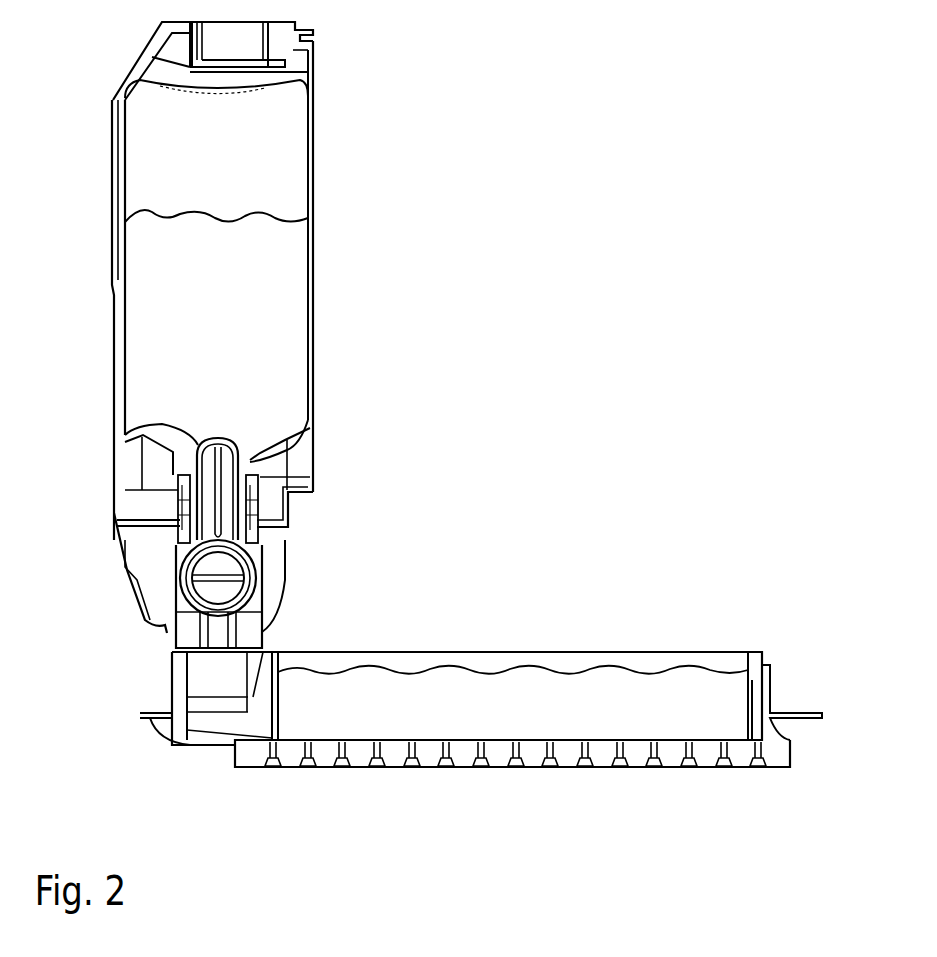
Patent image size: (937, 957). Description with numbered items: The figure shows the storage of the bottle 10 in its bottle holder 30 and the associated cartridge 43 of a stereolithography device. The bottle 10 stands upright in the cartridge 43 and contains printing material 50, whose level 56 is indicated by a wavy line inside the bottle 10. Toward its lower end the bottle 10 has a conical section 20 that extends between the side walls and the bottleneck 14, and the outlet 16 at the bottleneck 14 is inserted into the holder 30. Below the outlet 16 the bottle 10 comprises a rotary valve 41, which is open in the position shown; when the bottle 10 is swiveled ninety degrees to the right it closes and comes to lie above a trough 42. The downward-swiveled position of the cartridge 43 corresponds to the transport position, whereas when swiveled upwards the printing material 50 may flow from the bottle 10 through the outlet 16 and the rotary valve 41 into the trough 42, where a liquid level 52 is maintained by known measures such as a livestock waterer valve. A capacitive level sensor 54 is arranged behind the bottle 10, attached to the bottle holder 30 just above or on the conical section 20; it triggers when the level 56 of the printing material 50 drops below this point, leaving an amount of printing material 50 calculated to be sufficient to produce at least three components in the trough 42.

The cartridge 43 is at (357, 65).
The bottle 10 is at (287, 170).
The level 56 is at (173, 212).
The printing material 50 is at (233, 287).
The bottle holder 30 is at (255, 412).
The level sensor 54 is at (178, 425).
The conical section 20 is at (334, 445).
The outlet 16 is at (187, 503).
The bottleneck 14 is at (238, 508).
The rotary valve 41 is at (207, 588).
The trough 42 is at (502, 622).
The liquid level 52 is at (605, 668).